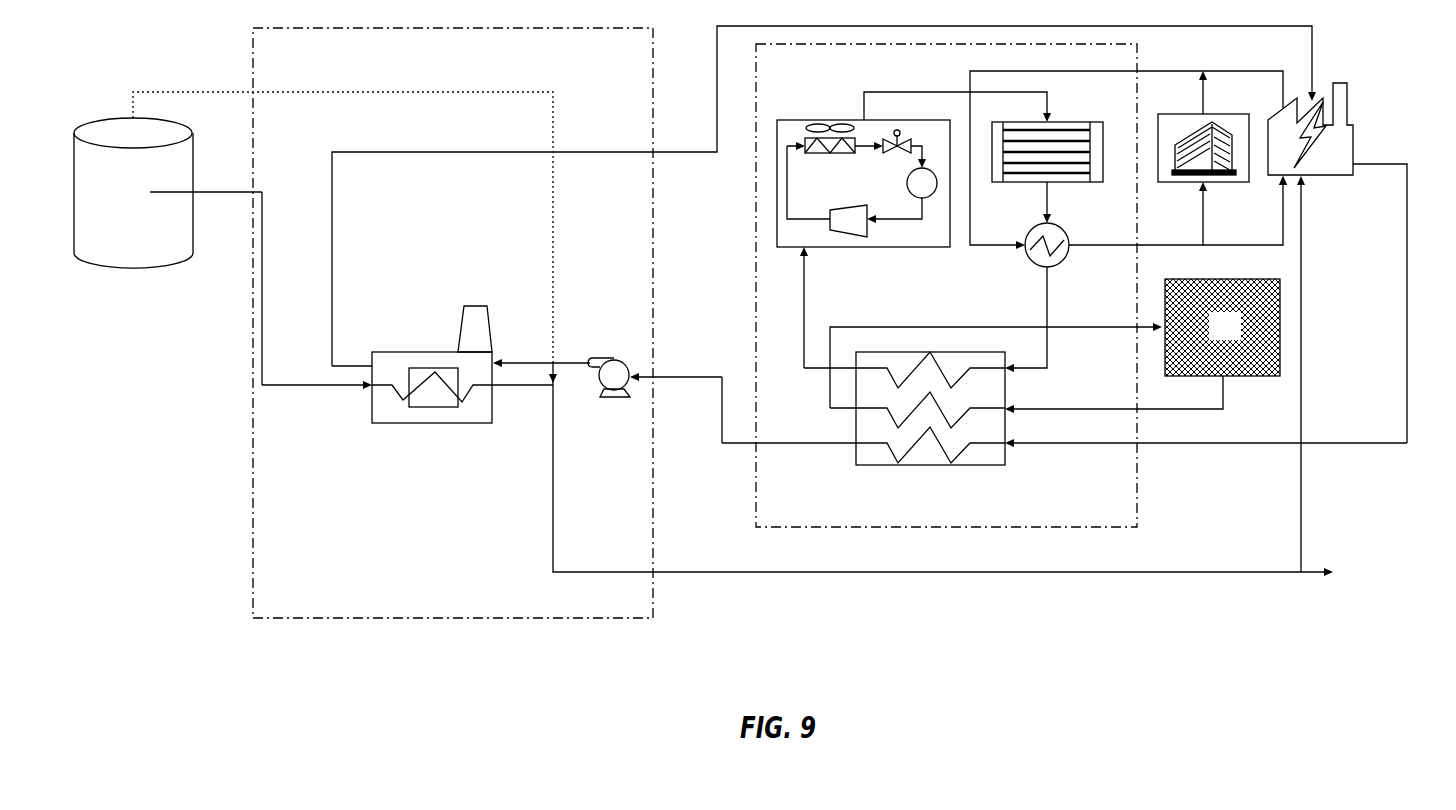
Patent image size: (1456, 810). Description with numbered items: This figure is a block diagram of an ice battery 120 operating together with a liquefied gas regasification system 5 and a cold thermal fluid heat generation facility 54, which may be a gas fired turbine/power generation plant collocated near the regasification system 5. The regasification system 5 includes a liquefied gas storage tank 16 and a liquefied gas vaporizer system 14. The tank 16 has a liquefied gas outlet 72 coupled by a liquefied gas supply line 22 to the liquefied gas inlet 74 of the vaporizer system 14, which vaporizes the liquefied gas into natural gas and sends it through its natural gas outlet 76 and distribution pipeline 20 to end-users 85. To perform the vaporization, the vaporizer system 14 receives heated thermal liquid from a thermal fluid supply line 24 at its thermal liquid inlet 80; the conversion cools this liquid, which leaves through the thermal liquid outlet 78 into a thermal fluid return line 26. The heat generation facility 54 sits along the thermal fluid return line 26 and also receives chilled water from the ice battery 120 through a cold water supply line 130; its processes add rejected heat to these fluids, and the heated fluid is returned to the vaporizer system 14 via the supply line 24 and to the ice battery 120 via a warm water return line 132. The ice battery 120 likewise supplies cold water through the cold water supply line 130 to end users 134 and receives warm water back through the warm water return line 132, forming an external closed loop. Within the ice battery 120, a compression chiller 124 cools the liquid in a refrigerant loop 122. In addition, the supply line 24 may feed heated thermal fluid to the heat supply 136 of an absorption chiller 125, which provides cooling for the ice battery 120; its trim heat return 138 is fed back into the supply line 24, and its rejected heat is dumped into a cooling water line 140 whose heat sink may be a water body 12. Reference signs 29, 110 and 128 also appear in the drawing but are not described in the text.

The regasification system 5 is at (506, 613).
The water body 12 is at (1239, 339).
The liquefied gas vaporizer system 14 is at (446, 403).
The liquefied gas storage tank 16 is at (142, 205).
The distribution pipeline 20 is at (727, 571).
The liquefied gas supply line 22 is at (265, 200).
The thermal fluid supply line 24 is at (716, 377).
The thermal fluid return line 26 is at (712, 153).
The boil-off gas line 29 is at (375, 92).
The cold thermal fluid heat generation facility 54 is at (1318, 128).
The liquefied gas outlet 72 is at (205, 190).
The liquefied gas inlet 74 is at (338, 390).
The natural gas outlet 76 is at (507, 390).
The thermal liquid outlet 78 is at (350, 365).
The thermal liquid inlet 80 is at (508, 362).
The end-users 85 is at (1380, 585).
The condenser 110 is at (1053, 150).
The ice battery 120 is at (1010, 520).
The refrigerant loop 122 is at (935, 92).
The compression chiller 124 is at (868, 200).
The absorption chiller 125 is at (930, 393).
The heat exchanger 128 is at (1060, 230).
The cold water supply line 130 is at (1072, 246).
The warm water return line 132 is at (973, 193).
The end users 134 is at (1220, 132).
The heat supply 136 is at (1126, 443).
The trim heat return 138 is at (778, 441).
The cooling water line 140 is at (1018, 327).